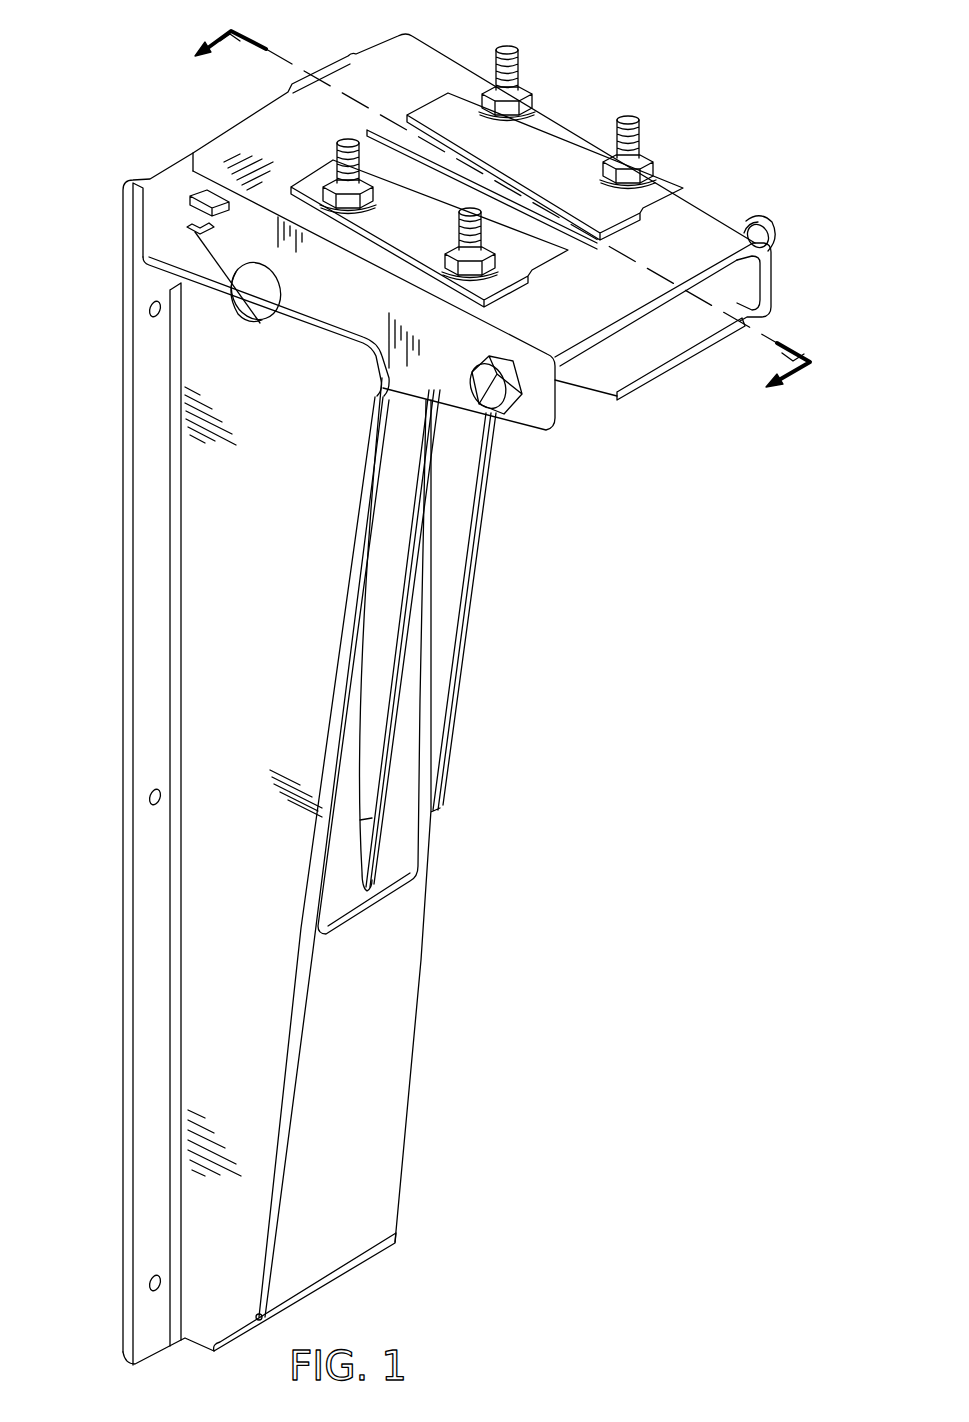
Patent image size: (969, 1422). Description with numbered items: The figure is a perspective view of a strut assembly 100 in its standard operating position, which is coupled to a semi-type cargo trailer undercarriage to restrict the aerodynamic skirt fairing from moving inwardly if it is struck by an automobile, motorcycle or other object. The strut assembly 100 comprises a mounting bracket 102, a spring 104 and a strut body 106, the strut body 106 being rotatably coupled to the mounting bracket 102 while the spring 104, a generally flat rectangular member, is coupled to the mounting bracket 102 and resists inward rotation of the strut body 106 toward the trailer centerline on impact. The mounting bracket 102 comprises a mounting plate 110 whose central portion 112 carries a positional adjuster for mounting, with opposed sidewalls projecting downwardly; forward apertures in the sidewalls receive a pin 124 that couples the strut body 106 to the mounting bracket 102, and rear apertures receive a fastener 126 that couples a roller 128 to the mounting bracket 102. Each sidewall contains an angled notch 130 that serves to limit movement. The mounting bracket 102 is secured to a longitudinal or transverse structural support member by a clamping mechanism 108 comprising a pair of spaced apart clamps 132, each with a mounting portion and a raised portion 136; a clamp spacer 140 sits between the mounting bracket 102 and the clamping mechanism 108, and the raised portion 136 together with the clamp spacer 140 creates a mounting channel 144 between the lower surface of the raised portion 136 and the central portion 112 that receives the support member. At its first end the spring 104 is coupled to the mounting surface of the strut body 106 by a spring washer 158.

The strut assembly 100 is at (105, 52).
The mounting bracket 102 is at (710, 205).
The spring 104 is at (690, 358).
The strut body 106 is at (118, 708).
The clamping mechanism 108 is at (645, 96).
The mounting plate 110 is at (627, 303).
The central portion 112 is at (258, 137).
The pin 124 is at (280, 297).
The fastener 126 is at (506, 425).
The roller 128 is at (575, 388).
The angled notch 130 is at (195, 233).
The clamps 132 is at (337, 172).
The raised portion 136 is at (422, 112).
The clamp spacer 140 is at (460, 310).
The mounting channel 144 is at (530, 207).
The spring washer 158 is at (187, 209).